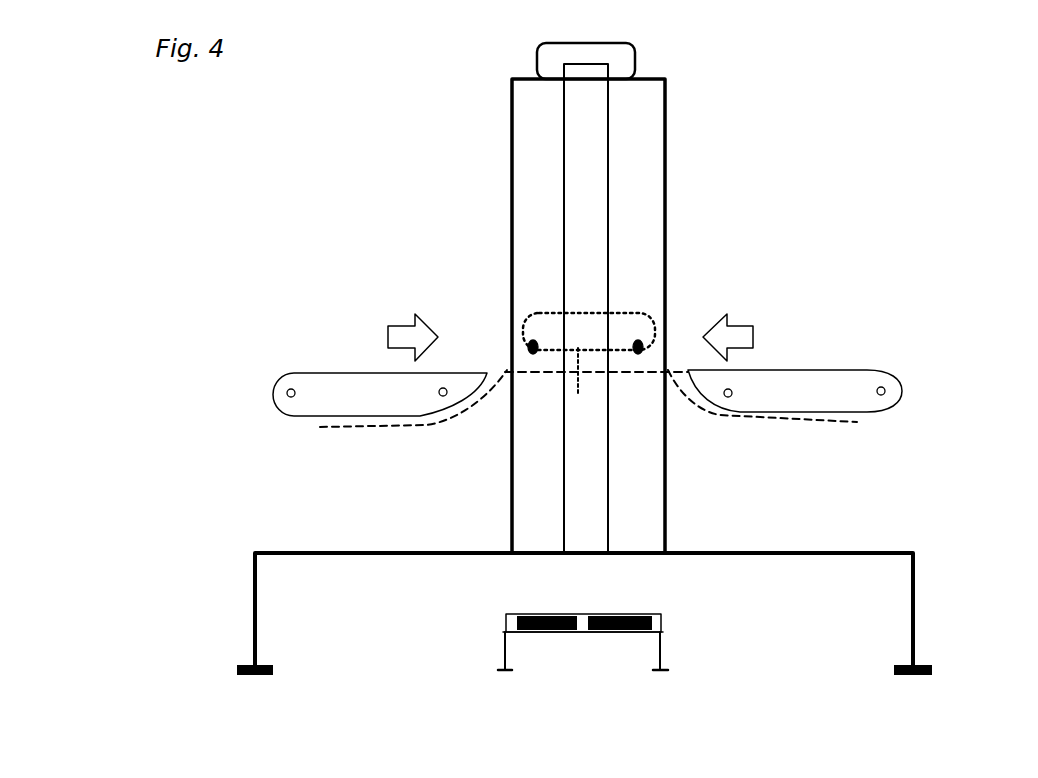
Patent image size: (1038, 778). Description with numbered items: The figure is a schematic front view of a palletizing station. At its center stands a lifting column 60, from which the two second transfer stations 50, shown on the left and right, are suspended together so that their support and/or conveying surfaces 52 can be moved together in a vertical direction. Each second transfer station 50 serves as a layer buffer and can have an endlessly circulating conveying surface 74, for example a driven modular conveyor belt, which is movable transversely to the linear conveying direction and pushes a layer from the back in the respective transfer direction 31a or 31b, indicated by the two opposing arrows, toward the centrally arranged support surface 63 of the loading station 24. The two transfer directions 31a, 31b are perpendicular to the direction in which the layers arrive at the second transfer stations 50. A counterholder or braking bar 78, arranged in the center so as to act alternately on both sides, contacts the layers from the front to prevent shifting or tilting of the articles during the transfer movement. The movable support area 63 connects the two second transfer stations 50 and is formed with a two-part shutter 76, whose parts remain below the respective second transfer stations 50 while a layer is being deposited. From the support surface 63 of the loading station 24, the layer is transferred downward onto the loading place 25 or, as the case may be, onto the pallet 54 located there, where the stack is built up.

The lifting column 60 is at (642, 123).
The braking bar 78 is at (533, 347).
The support surface 63 is at (505, 372).
The loading station 24 is at (643, 387).
The second transfer station 50 is at (290, 412).
The two-part shutter 76 is at (395, 430).
The conveying surface 52 is at (292, 350).
The endlessly circulating conveying surface 74 is at (365, 373).
The transfer direction 31a is at (733, 330).
The transfer direction 31b is at (400, 335).
The loading place 25 is at (500, 580).
The pallet 54 is at (510, 627).